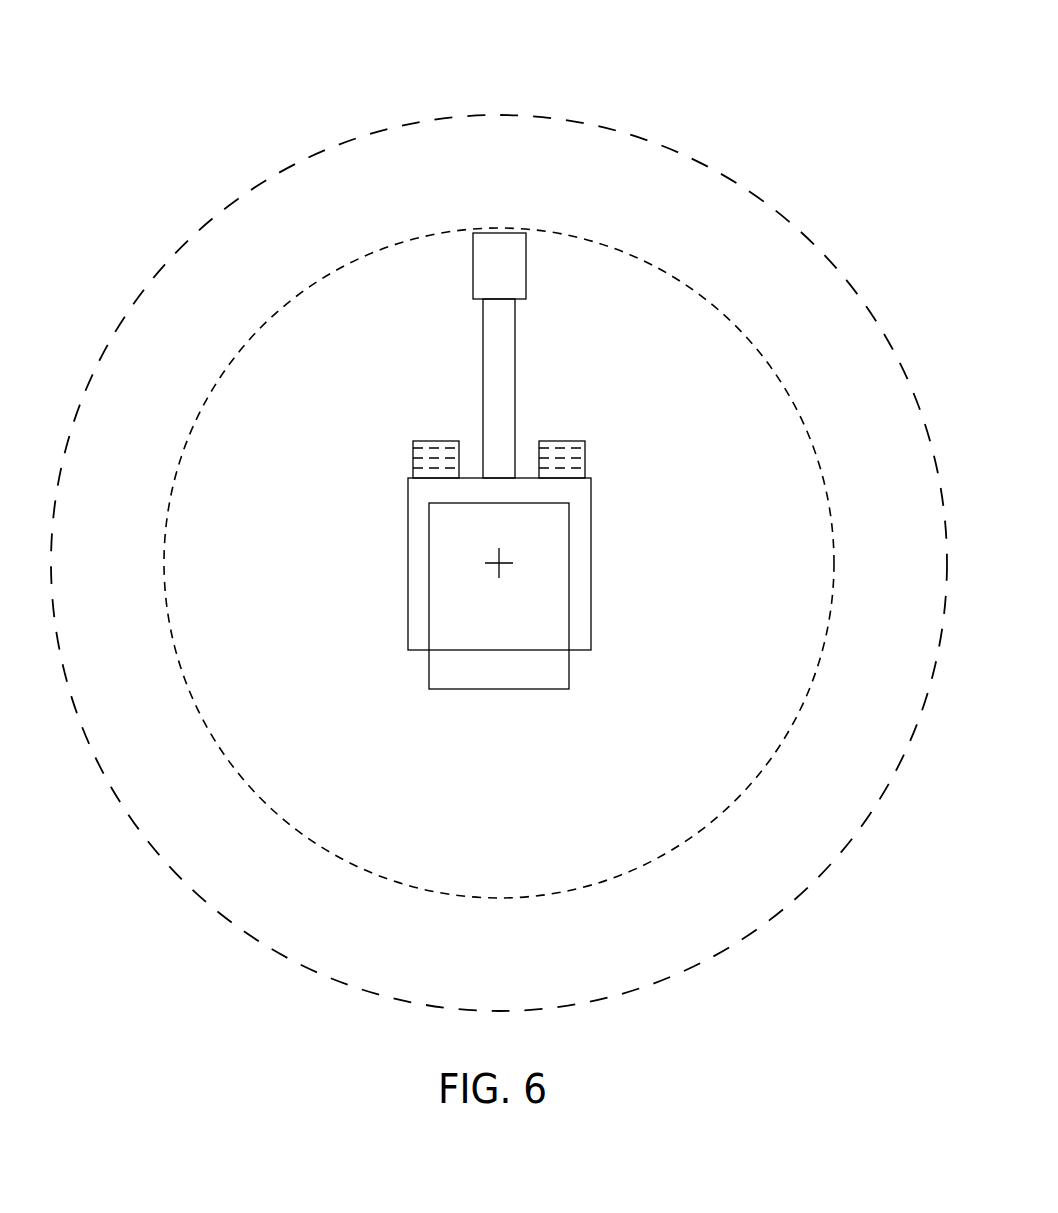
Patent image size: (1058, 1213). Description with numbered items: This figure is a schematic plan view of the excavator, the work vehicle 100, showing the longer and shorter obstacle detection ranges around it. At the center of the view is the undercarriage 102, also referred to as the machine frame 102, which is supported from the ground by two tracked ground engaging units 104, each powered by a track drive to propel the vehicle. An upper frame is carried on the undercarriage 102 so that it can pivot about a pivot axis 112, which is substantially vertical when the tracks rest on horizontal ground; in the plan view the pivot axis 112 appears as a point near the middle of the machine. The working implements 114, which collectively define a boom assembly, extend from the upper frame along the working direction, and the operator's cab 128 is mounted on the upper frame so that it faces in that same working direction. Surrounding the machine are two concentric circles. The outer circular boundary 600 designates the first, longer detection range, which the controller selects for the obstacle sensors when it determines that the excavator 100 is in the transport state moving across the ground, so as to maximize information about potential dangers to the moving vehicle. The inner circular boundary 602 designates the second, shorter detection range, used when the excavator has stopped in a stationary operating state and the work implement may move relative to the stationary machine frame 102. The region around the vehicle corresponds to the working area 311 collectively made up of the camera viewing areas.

The working area 311 is at (708, 104).
The circular boundary 600 is at (790, 214).
The circular boundary 602 is at (770, 362).
The work vehicle 100 is at (508, 503).
The undercarriage 102 is at (420, 548).
The tracked ground engaging units 104 is at (412, 453).
The pivot axis 112 is at (503, 566).
The working implements 114 is at (500, 363).
The operator's cab 128 is at (500, 668).